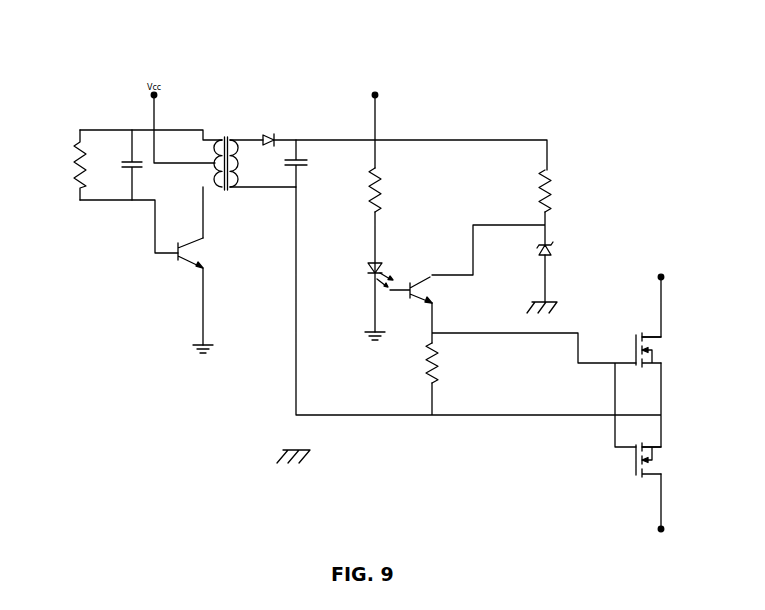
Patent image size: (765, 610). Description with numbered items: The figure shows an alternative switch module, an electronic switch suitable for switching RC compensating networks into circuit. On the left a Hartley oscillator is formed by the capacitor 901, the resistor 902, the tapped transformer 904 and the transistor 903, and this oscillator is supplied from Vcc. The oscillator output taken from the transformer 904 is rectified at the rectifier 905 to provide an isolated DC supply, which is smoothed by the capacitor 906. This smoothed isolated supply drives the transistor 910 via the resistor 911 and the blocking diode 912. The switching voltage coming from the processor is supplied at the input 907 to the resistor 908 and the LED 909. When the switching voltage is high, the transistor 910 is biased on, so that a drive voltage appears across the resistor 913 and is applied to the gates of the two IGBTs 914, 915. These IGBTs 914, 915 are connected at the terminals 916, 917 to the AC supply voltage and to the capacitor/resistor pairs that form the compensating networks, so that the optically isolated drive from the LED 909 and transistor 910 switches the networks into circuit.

The capacitor 901 is at (123, 178).
The resistor 902 is at (62, 142).
The transistor 903 is at (163, 267).
The tapped transformer 904 is at (217, 125).
The rectifier 905 is at (273, 122).
The capacitor 906 is at (305, 150).
The switching voltage input 907 is at (373, 83).
The resistor 908 is at (387, 185).
The LED 909 is at (365, 268).
The transistor 910 is at (403, 305).
The resistor 911 is at (558, 175).
The blocking diode 912 is at (555, 242).
The resistor 913 is at (412, 360).
The IGBT 914 is at (670, 335).
The IGBT 915 is at (678, 462).
The connection terminal 916 is at (672, 525).
The connection terminal 917 is at (670, 263).